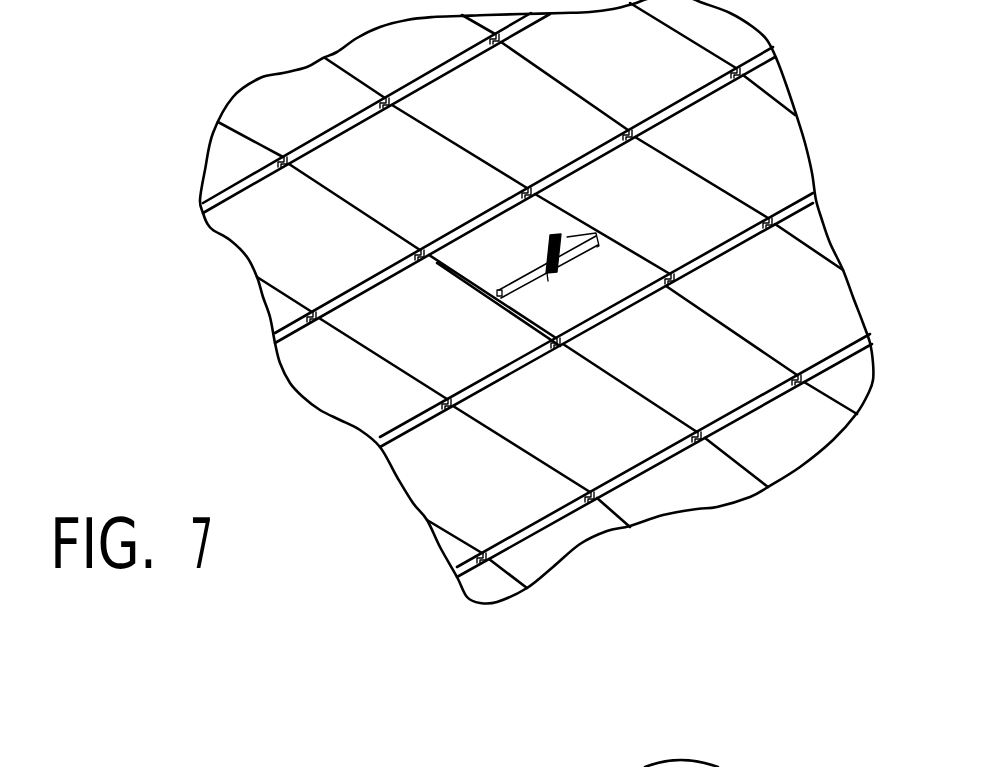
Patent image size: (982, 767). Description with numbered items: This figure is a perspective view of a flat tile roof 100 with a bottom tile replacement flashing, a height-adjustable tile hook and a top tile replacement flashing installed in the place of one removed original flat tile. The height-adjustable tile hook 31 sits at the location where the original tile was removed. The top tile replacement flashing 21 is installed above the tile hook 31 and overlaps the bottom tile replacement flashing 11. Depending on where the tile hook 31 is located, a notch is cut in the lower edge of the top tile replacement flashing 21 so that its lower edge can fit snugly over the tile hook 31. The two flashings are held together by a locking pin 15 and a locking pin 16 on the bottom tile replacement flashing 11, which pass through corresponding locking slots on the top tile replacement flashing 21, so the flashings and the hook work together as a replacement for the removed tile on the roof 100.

The flat tile roof 100 is at (485, 302).
The top tile replacement flashing 21 is at (512, 235).
The bottom tile replacement flashing 11 is at (623, 273).
The locking pin 16 is at (589, 236).
The height-adjustable tile hook 31 is at (561, 233).
The locking pin 15 is at (498, 289).